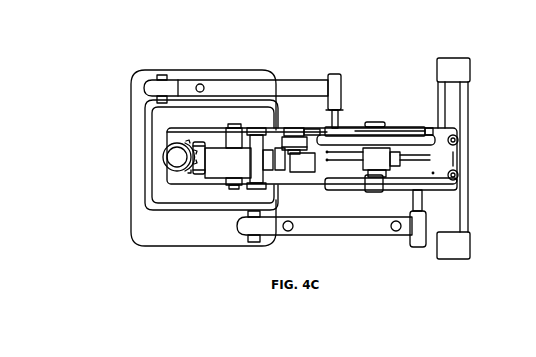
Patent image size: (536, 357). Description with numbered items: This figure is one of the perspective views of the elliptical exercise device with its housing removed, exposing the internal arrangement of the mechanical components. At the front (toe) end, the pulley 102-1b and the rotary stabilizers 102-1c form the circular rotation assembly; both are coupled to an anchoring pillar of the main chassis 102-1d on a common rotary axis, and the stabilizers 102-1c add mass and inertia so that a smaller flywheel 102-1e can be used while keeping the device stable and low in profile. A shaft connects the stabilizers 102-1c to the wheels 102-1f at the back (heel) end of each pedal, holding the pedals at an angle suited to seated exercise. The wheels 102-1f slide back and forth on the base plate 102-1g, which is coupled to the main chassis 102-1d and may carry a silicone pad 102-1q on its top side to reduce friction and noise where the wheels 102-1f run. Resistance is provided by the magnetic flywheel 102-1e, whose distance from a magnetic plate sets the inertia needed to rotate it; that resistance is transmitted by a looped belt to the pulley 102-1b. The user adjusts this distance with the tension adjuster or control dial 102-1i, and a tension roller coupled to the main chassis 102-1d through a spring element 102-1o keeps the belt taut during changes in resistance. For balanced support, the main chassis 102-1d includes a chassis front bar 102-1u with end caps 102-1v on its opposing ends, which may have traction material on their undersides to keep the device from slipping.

The wheels 102-1f is at (157, 83).
The tension adjuster/control dial 102-1i is at (180, 157).
The spring element 102-1o is at (306, 133).
The rotary stabilizers 102-1c is at (346, 130).
The end caps 102-1v is at (455, 73).
The chassis front bar 102-1u is at (455, 106).
The pulley 102-1b is at (425, 140).
The main chassis 102-1d is at (448, 163).
The silicone pad 102-1q is at (150, 229).
The base plate 102-1g is at (147, 245).
The flywheel 102-1e is at (223, 167).